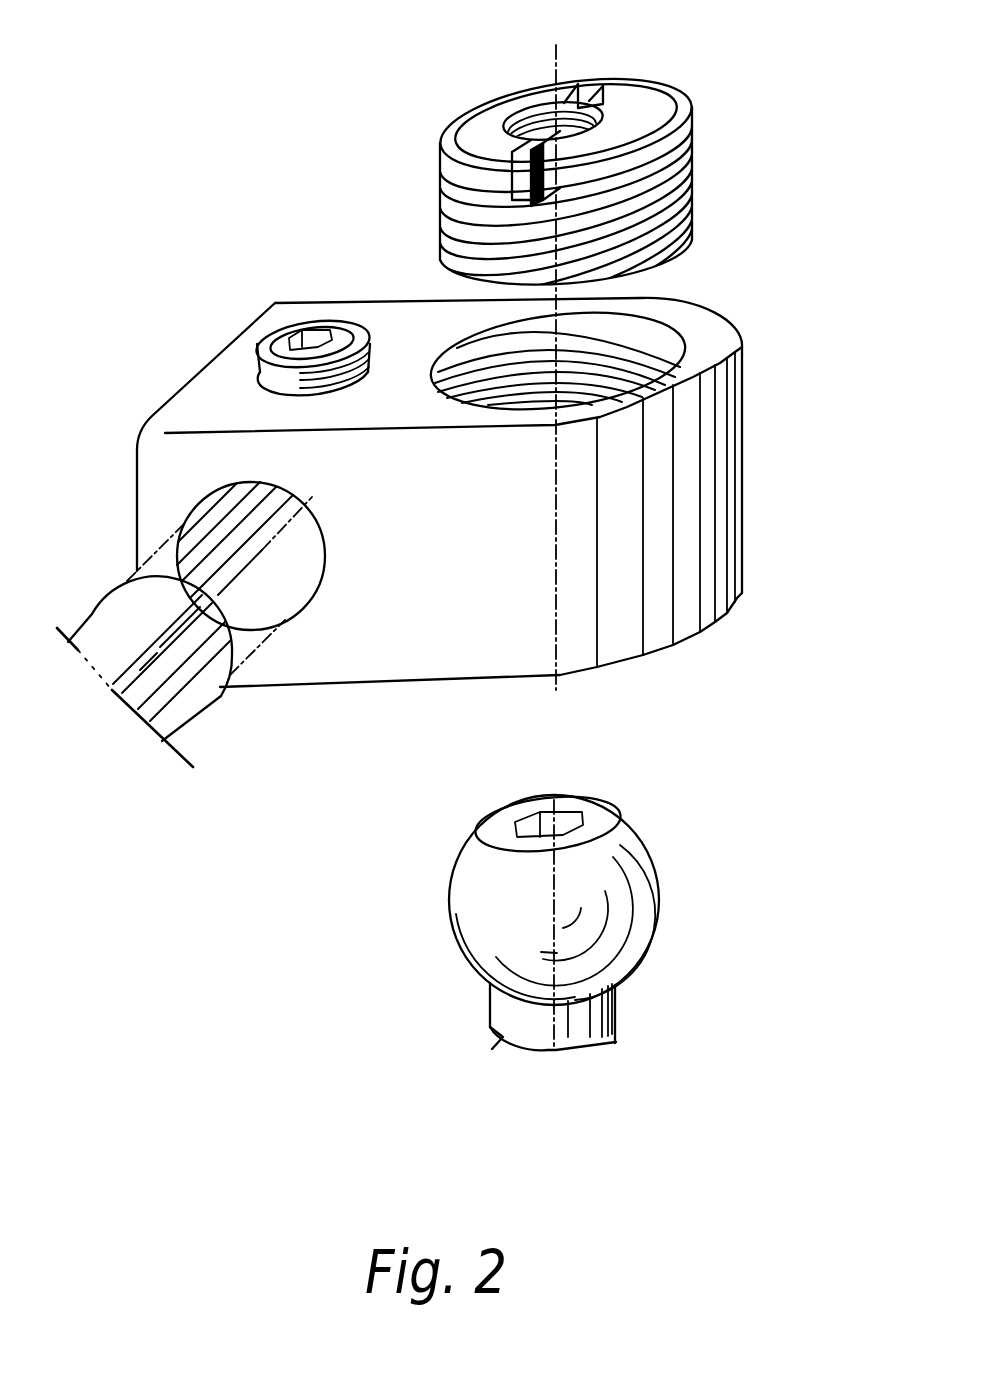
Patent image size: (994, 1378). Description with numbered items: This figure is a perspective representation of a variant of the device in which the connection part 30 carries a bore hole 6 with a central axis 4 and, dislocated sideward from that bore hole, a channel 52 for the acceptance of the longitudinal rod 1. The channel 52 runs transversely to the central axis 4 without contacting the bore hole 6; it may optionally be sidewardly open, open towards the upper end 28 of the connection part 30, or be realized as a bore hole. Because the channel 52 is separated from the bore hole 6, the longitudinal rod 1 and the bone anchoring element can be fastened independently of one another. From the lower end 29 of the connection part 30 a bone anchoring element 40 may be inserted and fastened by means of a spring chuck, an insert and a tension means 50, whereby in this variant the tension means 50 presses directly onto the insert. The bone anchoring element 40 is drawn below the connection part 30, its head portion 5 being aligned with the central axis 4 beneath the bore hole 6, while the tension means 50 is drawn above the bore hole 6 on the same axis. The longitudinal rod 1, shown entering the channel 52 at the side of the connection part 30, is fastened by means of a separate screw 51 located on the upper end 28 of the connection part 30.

The longitudinal rod 1 is at (207, 708).
The central axis 4 is at (558, 62).
The ball head 5 is at (660, 872).
The bore hole 6 is at (703, 336).
The upper end 28 is at (180, 412).
The lower end 29 is at (628, 666).
The connection part 30 is at (479, 497).
The bone anchoring element 40 is at (618, 919).
The tension means 50 is at (732, 168).
The separate screw 51 is at (283, 337).
The channel 52 is at (275, 600).